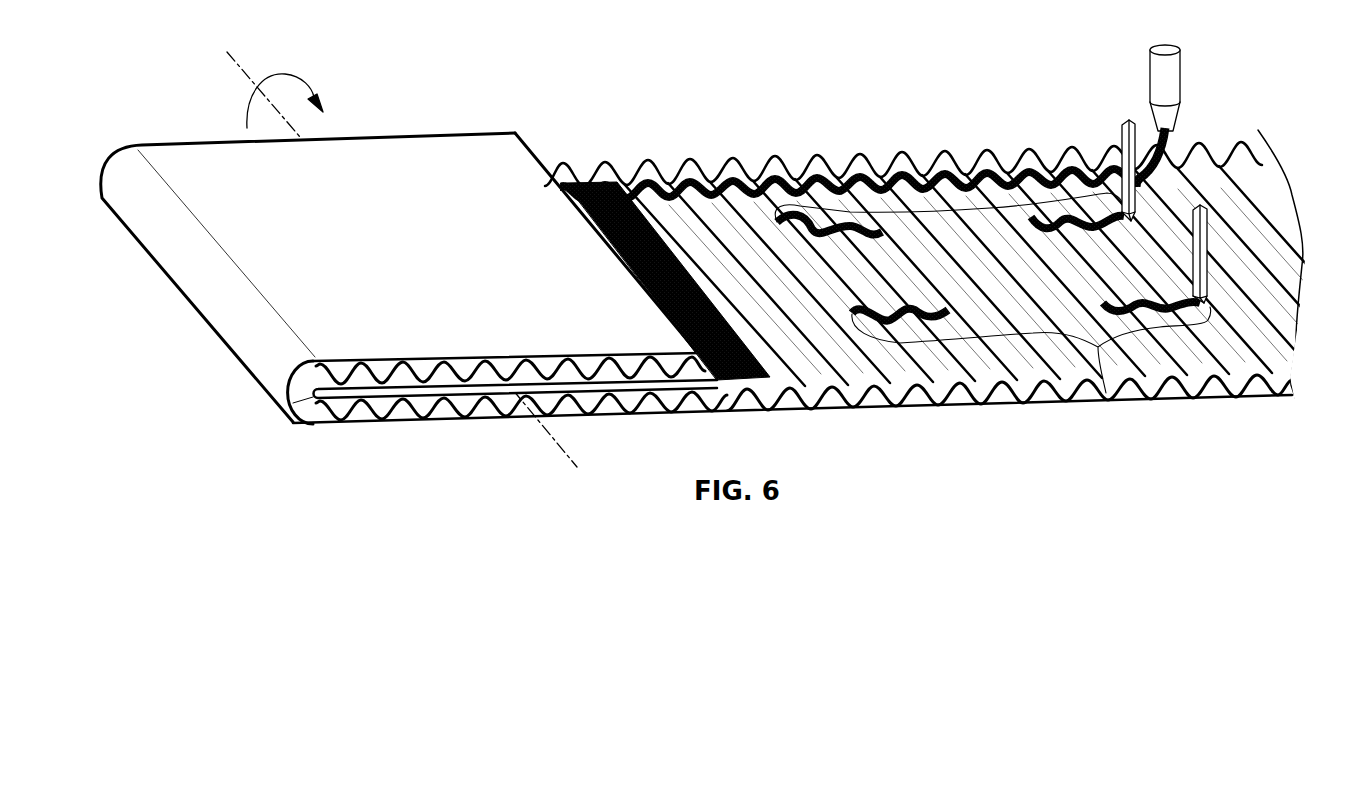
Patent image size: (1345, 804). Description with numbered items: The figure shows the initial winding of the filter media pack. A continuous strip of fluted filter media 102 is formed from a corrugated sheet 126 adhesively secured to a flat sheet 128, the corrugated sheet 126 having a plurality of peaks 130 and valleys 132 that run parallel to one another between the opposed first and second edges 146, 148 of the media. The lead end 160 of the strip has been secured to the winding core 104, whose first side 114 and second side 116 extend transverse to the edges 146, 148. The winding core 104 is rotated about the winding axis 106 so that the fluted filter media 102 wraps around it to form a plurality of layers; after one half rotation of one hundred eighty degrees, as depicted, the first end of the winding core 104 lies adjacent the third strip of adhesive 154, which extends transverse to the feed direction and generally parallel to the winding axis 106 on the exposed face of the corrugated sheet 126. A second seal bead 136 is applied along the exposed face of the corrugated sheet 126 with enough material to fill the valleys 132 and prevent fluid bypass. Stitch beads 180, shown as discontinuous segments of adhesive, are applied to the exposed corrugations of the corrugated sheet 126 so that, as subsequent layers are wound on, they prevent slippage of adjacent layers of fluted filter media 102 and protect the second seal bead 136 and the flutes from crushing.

The fluted filter media 102 is at (1028, 160).
The winding core 104 is at (485, 392).
The winding axis 106 is at (227, 52).
The first side of the winding core 114 is at (737, 402).
The second side of the winding core 116 is at (293, 423).
The corrugated sheet 126 is at (1023, 402).
The flat sheet 128 is at (446, 140).
The peaks 130 is at (688, 173).
The valleys 132 is at (669, 146).
The second seal bead 136 is at (1078, 177).
The first edge 146 is at (777, 173).
The second edge 148 is at (620, 417).
The third strip of adhesive 154 is at (603, 186).
The lead end 160 is at (530, 150).
The stitch beads 180 is at (990, 208).